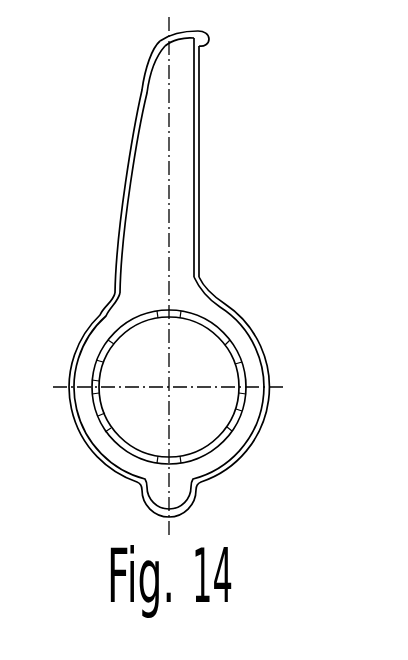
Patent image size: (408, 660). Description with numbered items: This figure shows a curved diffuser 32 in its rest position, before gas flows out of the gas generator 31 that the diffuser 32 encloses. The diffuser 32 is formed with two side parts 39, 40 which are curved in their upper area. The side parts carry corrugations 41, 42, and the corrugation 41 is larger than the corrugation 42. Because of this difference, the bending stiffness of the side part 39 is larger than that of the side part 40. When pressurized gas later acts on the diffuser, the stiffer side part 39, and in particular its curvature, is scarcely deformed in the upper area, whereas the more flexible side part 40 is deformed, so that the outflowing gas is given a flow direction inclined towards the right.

The gas generator 31 is at (198, 362).
The diffuser 32 is at (129, 65).
The side part 39 is at (132, 102).
The side part 40 is at (207, 48).
The corrugation 41 is at (157, 263).
The corrugation 42 is at (180, 218).